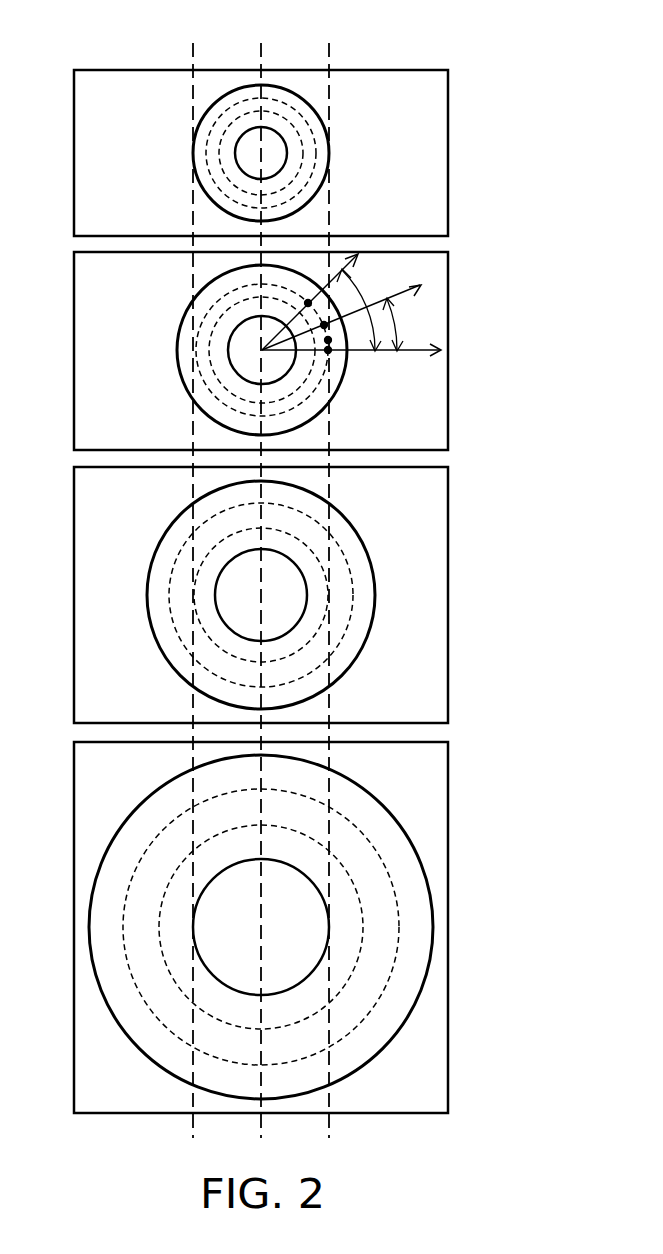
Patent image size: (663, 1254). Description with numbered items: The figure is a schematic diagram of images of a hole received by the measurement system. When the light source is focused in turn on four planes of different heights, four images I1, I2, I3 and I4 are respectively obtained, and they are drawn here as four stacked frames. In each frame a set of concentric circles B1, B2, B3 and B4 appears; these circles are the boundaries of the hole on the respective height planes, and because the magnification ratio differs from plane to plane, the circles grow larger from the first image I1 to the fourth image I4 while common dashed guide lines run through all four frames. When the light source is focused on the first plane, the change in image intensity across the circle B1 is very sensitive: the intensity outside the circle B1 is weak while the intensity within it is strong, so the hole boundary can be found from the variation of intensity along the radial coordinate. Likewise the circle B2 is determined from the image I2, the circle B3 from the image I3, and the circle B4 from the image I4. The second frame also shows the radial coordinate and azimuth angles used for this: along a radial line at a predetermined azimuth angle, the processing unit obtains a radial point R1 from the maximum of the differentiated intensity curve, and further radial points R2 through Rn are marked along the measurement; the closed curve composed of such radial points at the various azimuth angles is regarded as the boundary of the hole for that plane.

The image I1 is at (448, 152).
The image I2 is at (448, 350).
The image I3 is at (448, 595).
The image I4 is at (448, 927).
The circle B1 is at (273, 85).
The circle B2 is at (287, 102).
The circle B3 is at (297, 131).
The circle B4 is at (287, 152).
The radial point R1 is at (325, 328).
The second radial position R2 is at (308, 300).
The n-th radial position Rn is at (328, 353).